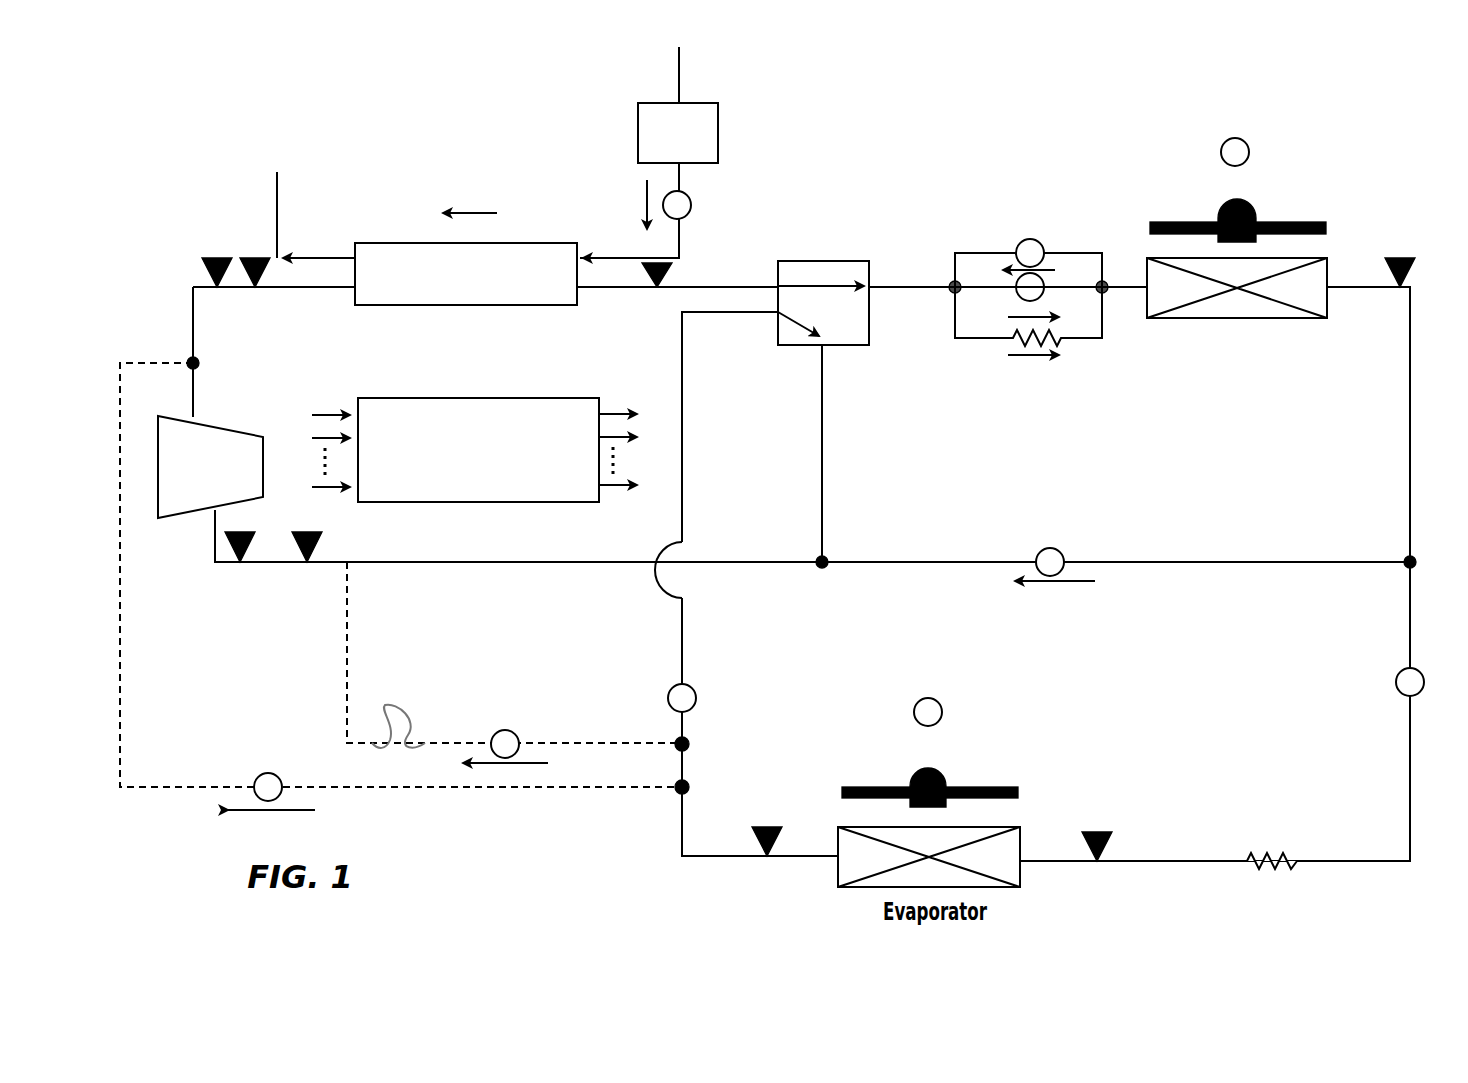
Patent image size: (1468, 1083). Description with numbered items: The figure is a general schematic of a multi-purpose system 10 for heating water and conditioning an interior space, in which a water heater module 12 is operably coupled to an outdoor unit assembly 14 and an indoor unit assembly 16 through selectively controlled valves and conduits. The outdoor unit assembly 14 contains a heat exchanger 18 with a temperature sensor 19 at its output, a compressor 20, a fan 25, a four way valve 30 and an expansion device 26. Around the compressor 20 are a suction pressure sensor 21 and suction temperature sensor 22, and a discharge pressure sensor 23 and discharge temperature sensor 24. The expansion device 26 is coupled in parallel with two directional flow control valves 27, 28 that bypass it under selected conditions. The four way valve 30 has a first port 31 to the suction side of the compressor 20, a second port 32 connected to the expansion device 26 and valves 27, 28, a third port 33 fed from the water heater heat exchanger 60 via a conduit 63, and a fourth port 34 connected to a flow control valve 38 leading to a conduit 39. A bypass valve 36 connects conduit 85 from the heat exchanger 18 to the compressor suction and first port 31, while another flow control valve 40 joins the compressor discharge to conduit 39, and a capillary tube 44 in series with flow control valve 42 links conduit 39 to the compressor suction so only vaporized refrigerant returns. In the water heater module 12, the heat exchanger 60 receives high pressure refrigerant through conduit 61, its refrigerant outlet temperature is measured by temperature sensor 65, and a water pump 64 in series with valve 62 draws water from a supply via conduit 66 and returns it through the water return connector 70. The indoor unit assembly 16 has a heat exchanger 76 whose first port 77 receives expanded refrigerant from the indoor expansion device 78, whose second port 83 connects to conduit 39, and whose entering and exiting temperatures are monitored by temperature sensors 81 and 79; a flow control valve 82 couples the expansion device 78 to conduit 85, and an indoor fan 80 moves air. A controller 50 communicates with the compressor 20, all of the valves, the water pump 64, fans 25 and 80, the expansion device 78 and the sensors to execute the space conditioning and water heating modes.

The multi-purpose system 10 is at (1030, 55).
The water heater module 12 is at (480, 150).
The outdoor unit assembly 14 is at (1262, 85).
The indoor unit assembly 16 is at (1212, 912).
The heat exchanger 18 is at (1237, 336).
The temperature sensor 19 is at (1400, 326).
The compressor 20 is at (210, 467).
The suction pressure sensor 21 is at (202, 589).
The suction temperature sensor 22 is at (307, 600).
The discharge pressure sensor 23 is at (175, 288).
The discharge temperature sensor 24 is at (253, 290).
The fan 25 is at (1238, 183).
The expansion device 26 is at (1036, 361).
The flow control valve 27 is at (1003, 341).
The flow control valve 28 is at (1028, 209).
The four way valve 30 is at (823, 289).
The first port 31 is at (843, 382).
The second port 32 is at (912, 246).
The third port 33 is at (735, 264).
The fourth port 34 is at (730, 353).
The bypass valve 36 is at (1091, 531).
The flow control valve 38 is at (701, 676).
The conduit 39 is at (728, 742).
The flow control valve 40 is at (223, 763).
The flow control valve 42 is at (540, 707).
The capillary tube 44 is at (426, 702).
The controller 50 is at (474, 450).
The heat exchanger 60 is at (466, 274).
The conduit 61 is at (358, 322).
The valve 62 is at (681, 210).
The conduit 63 is at (598, 326).
The water pump 64 is at (678, 133).
The temperature sensor 65 is at (638, 321).
The conduit 66 is at (705, 60).
The water return connector 70 is at (291, 199).
The heat exchanger 76 is at (1058, 806).
The first port 77 is at (1076, 843).
The indoor expansion device 78 is at (1317, 832).
The temperature sensor 79 is at (767, 825).
The indoor fan 80 is at (952, 752).
The temperature sensor 81 is at (1135, 814).
The flow control valve 82 is at (1358, 670).
The second port 83 is at (813, 805).
The conduit 85 is at (1356, 615).